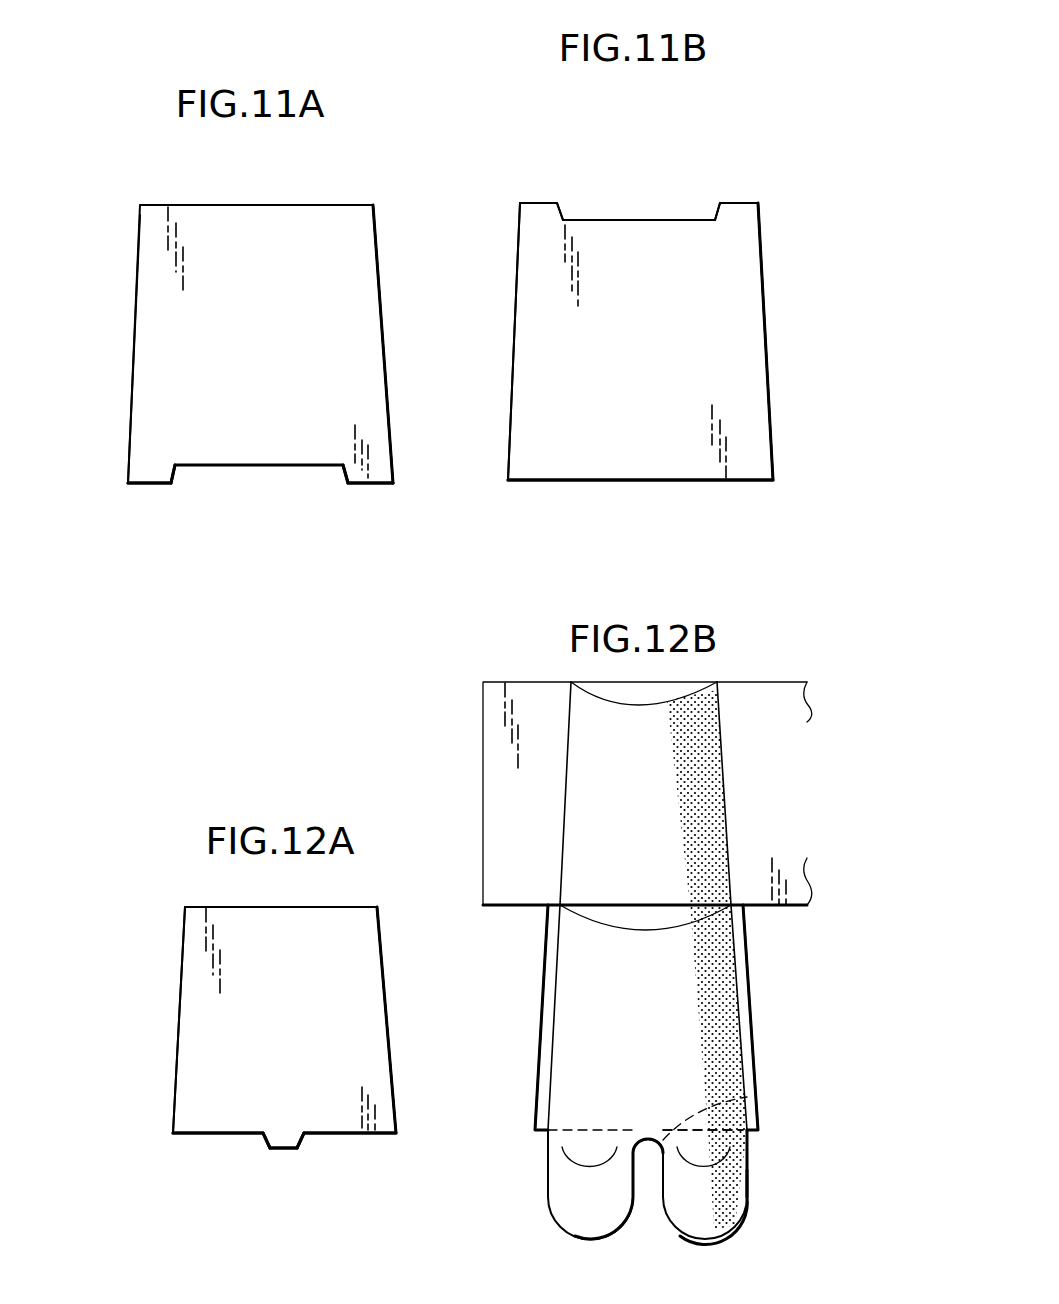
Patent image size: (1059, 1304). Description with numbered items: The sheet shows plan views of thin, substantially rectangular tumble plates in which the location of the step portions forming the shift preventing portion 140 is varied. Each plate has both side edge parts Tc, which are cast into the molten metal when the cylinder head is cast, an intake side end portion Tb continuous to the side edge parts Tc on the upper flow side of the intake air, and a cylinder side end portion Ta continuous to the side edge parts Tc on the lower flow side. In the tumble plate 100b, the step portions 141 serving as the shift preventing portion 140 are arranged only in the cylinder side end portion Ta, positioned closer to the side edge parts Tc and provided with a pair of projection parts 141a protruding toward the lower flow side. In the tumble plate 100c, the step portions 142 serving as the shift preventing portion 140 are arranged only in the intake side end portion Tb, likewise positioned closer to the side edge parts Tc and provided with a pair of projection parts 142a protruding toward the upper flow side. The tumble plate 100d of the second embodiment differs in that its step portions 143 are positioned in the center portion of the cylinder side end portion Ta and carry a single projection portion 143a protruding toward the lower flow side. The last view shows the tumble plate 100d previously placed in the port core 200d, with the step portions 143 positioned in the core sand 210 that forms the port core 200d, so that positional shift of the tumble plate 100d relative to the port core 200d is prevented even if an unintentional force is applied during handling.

In FIG. 11A, the tumble plate 100b is at (122, 210).
In FIG. 11B, the tumble plate 100c is at (506, 210).
In FIG. 12A, the tumble plate 100d is at (178, 920).
In FIG. 12B, the tumble plate 100d is at (525, 978).
In FIG. 12B, the port core 200d is at (458, 716).
In FIG. 12B, the core sand 210 is at (715, 787).
In FIG. 11A, the shift preventing portion 140 is at (268, 533).
In FIG. 11B, the shift preventing portion 140 is at (647, 140).
In FIG. 12A, the shift preventing portion 140 is at (345, 1195).
In FIG. 12B, the shift preventing portion 140 is at (832, 1072).
In FIG. 11A, the step portion 141 is at (175, 475).
In FIG. 11A, the projection part 141a is at (150, 485).
In FIG. 11B, the step portion 142 is at (563, 217).
In FIG. 11B, the projection part 142a is at (540, 203).
In FIG. 12A, the step portion 143 is at (263, 1140).
In FIG. 12B, the step portion 143 is at (747, 1093).
In FIG. 12A, the projection portion 143a is at (276, 1147).
In FIG. 12B, the projection portion 143a is at (642, 1138).
In FIG. 11A, the cylinder side end portion Ta is at (256, 465).
In FIG. 11B, the cylinder side end portion Ta is at (641, 480).
In FIG. 12A, the cylinder side end portion Ta is at (326, 1133).
In FIG. 12B, the cylinder side end portion Ta is at (733, 1157).
In FIG. 11A, the intake side end portion Tb is at (257, 205).
In FIG. 11B, the intake side end portion Tb is at (640, 220).
In FIG. 12A, the intake side end portion Tb is at (282, 907).
In FIG. 12B, the intake side end portion Tb is at (640, 905).
In FIG. 11A, the side edge parts Tc is at (140, 280).
In FIG. 11B, the side edge parts Tc is at (518, 318).
In FIG. 12A, the side edge parts Tc is at (185, 998).
In FIG. 12B, the side edge parts Tc is at (535, 1035).